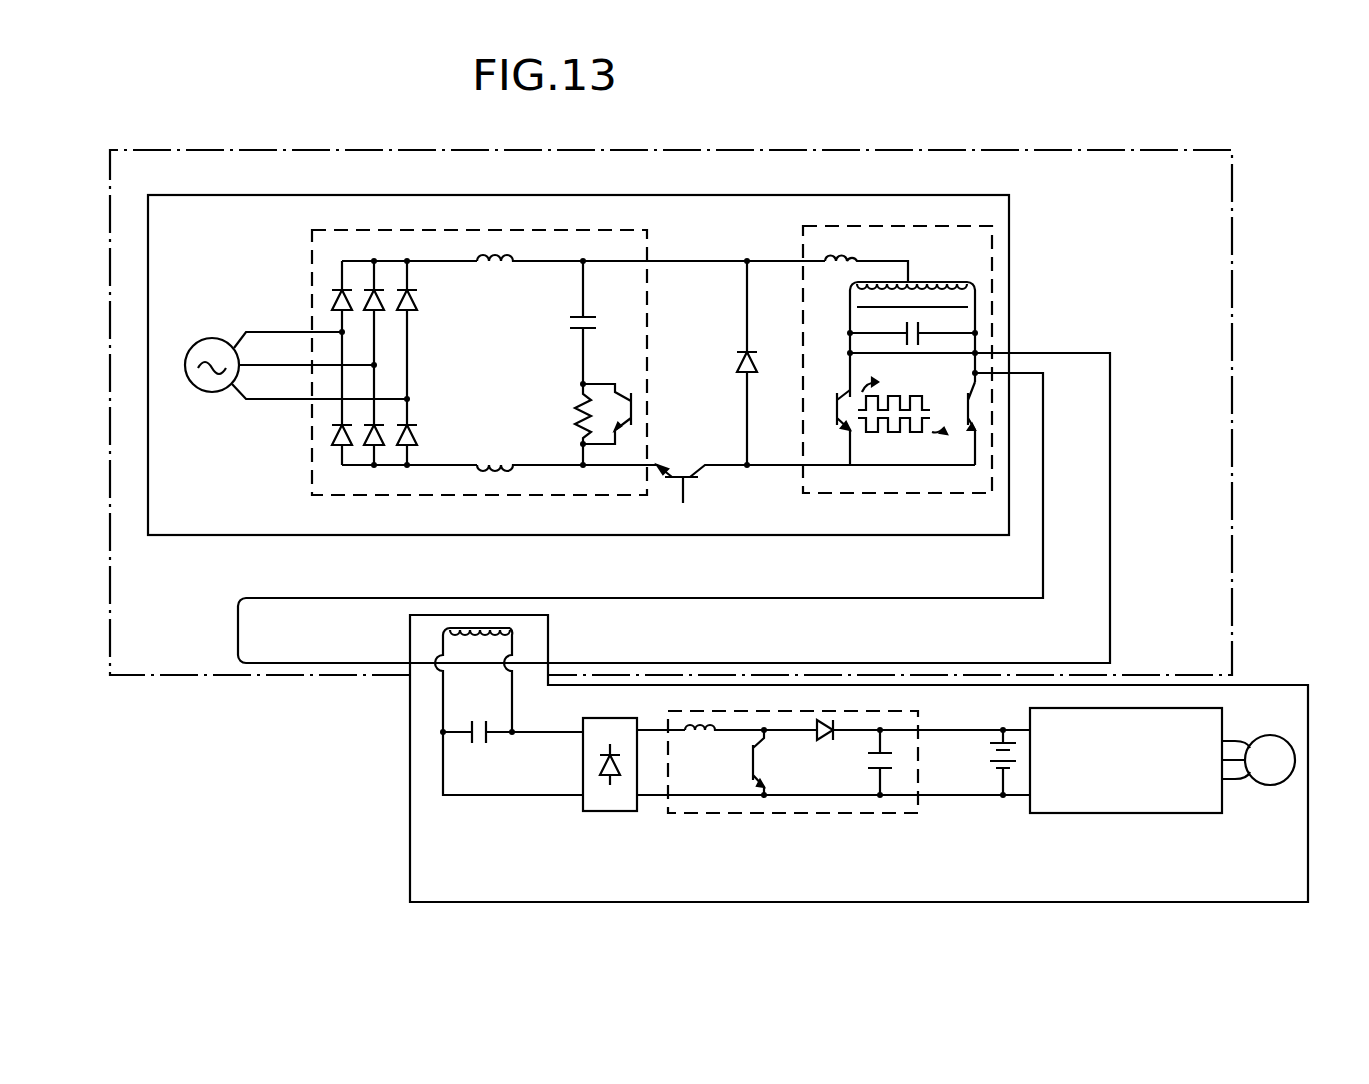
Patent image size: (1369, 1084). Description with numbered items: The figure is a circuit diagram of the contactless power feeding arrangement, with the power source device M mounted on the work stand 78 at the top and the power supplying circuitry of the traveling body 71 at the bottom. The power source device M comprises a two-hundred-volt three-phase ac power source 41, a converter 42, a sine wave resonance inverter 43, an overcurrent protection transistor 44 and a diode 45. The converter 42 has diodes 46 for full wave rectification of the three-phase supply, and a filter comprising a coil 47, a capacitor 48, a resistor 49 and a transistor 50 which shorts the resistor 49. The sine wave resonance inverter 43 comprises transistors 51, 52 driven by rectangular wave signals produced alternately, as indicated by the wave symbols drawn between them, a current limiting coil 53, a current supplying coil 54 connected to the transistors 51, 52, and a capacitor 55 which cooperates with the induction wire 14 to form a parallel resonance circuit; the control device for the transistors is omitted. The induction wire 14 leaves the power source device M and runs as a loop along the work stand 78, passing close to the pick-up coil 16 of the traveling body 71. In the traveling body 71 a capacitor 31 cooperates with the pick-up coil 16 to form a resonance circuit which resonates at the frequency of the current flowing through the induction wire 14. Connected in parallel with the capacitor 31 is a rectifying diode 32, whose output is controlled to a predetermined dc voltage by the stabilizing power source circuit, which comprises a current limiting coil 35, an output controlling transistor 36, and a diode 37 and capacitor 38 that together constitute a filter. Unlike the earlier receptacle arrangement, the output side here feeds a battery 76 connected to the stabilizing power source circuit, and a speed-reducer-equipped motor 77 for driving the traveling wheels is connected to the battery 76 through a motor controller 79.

The induction wire 14 is at (1112, 494).
The pick-up coil 16 is at (516, 624).
The capacitor 31 is at (481, 746).
The rectifying diode 32 is at (580, 766).
The current limiting coil 35 is at (698, 738).
The output controlling transistor 36 is at (753, 764).
The diode 37 is at (832, 741).
The capacitor 38 is at (909, 760).
The 3-phase ac power source 41 is at (216, 338).
The converter 42 is at (647, 240).
The sine wave resonance inverter 43 is at (802, 238).
The overcurrent protection transistor 44 is at (687, 463).
The diode 45 is at (735, 356).
The diodes 46 is at (407, 345).
The coil 47 is at (493, 266).
The capacitor 48 is at (570, 318).
The resistor 49 is at (574, 415).
The transistor 50 is at (621, 390).
The transistor 51 is at (837, 400).
The transistor 52 is at (968, 410).
The current limiting coil 53 is at (857, 251).
The current supplying coil 54 is at (940, 282).
The capacitor 55 is at (930, 318).
The traveling body 71 is at (1308, 722).
The battery 76 is at (990, 761).
The speed-reducer-equipped motor 77 is at (1258, 786).
The work stand 78 is at (1233, 226).
The motor controller 79 is at (1148, 813).
The power source device M is at (1009, 233).